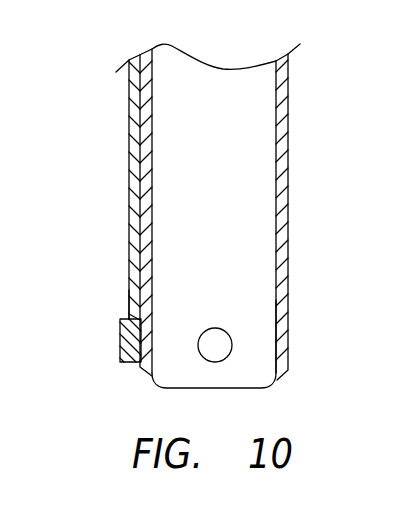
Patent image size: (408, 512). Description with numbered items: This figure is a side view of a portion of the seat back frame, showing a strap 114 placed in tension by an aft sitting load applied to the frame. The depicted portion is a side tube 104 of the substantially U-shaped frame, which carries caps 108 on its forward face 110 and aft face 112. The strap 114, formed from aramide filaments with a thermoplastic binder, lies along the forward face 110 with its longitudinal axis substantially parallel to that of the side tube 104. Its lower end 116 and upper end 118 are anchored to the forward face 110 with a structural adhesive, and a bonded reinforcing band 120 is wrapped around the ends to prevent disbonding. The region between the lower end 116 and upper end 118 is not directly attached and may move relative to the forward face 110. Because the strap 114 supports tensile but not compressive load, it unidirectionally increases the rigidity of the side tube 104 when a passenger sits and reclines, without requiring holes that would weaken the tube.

The side tube 104 is at (282, 240).
The cap 108 is at (128, 190).
The forward face 110 is at (150, 260).
The aft face 112 is at (281, 312).
The strap 114 is at (130, 223).
The lower end 116 is at (132, 307).
The upper end 118 is at (132, 88).
The reinforcing band 120 is at (120, 343).